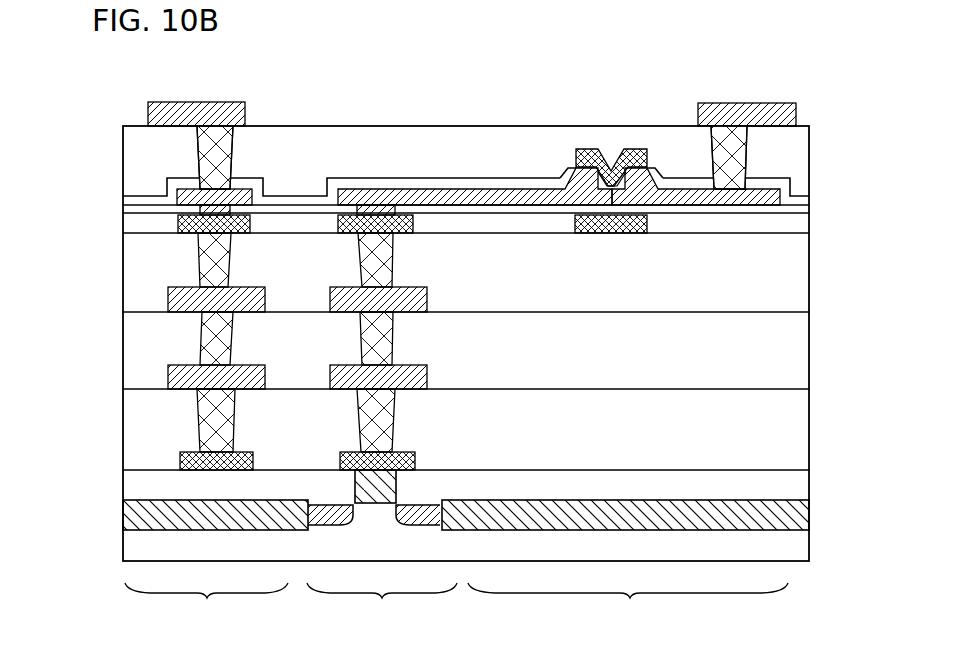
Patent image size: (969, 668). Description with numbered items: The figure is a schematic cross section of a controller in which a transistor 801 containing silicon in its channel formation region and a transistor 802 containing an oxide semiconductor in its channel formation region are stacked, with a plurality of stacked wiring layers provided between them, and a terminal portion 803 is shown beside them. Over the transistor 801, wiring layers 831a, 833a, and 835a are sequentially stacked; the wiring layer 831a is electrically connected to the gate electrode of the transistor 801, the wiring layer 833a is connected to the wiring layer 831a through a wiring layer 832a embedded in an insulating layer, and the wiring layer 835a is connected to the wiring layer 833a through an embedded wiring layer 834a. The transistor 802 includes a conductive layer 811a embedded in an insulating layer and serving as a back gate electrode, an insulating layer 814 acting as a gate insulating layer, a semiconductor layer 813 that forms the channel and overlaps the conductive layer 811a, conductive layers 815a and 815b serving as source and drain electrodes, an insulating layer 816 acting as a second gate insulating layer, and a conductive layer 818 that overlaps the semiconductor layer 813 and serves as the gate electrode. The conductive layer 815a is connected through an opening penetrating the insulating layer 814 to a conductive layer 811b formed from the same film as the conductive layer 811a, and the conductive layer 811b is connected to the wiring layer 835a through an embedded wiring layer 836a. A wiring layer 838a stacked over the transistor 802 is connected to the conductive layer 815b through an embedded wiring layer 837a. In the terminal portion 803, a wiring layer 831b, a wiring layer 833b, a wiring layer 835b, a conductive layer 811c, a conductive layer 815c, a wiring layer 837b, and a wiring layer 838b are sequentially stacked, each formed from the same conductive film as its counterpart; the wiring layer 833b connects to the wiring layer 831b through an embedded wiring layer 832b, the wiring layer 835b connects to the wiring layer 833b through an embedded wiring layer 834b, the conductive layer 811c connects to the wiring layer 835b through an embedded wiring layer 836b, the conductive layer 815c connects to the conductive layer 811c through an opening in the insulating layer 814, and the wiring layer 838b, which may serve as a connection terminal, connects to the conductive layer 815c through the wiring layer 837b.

The transistor 801 is at (382, 607).
The transistor 802 is at (628, 607).
The terminal portion 803 is at (206, 607).
The conductive layer 811a is at (614, 155).
The conductive layer 811b is at (389, 155).
The conductive layer 811c is at (217, 145).
The semiconductor layer 813 is at (622, 116).
The insulating layer 814 is at (495, 236).
The conductive layer 815a is at (475, 146).
The conductive layer 815b is at (696, 136).
The conductive layer 815c is at (241, 143).
The insulating layer 816 is at (495, 214).
The conductive layer 818 is at (600, 116).
The wiring layer 831a is at (610, 478).
The wiring layer 831b is at (149, 478).
The wiring layer 832a is at (618, 429).
The wiring layer 832b is at (140, 432).
The wiring layer 833a is at (605, 395).
The wiring layer 833b is at (155, 395).
The wiring layer 834a is at (620, 351).
The wiring layer 834b is at (139, 351).
The wiring layer 835a is at (605, 317).
The wiring layer 835b is at (155, 315).
The wiring layer 836a is at (619, 267).
The wiring layer 836b is at (138, 267).
The wiring layer 837a is at (771, 171).
The wiring layer 837b is at (302, 174).
The wiring layer 838a is at (779, 131).
The wiring layer 838b is at (145, 126).